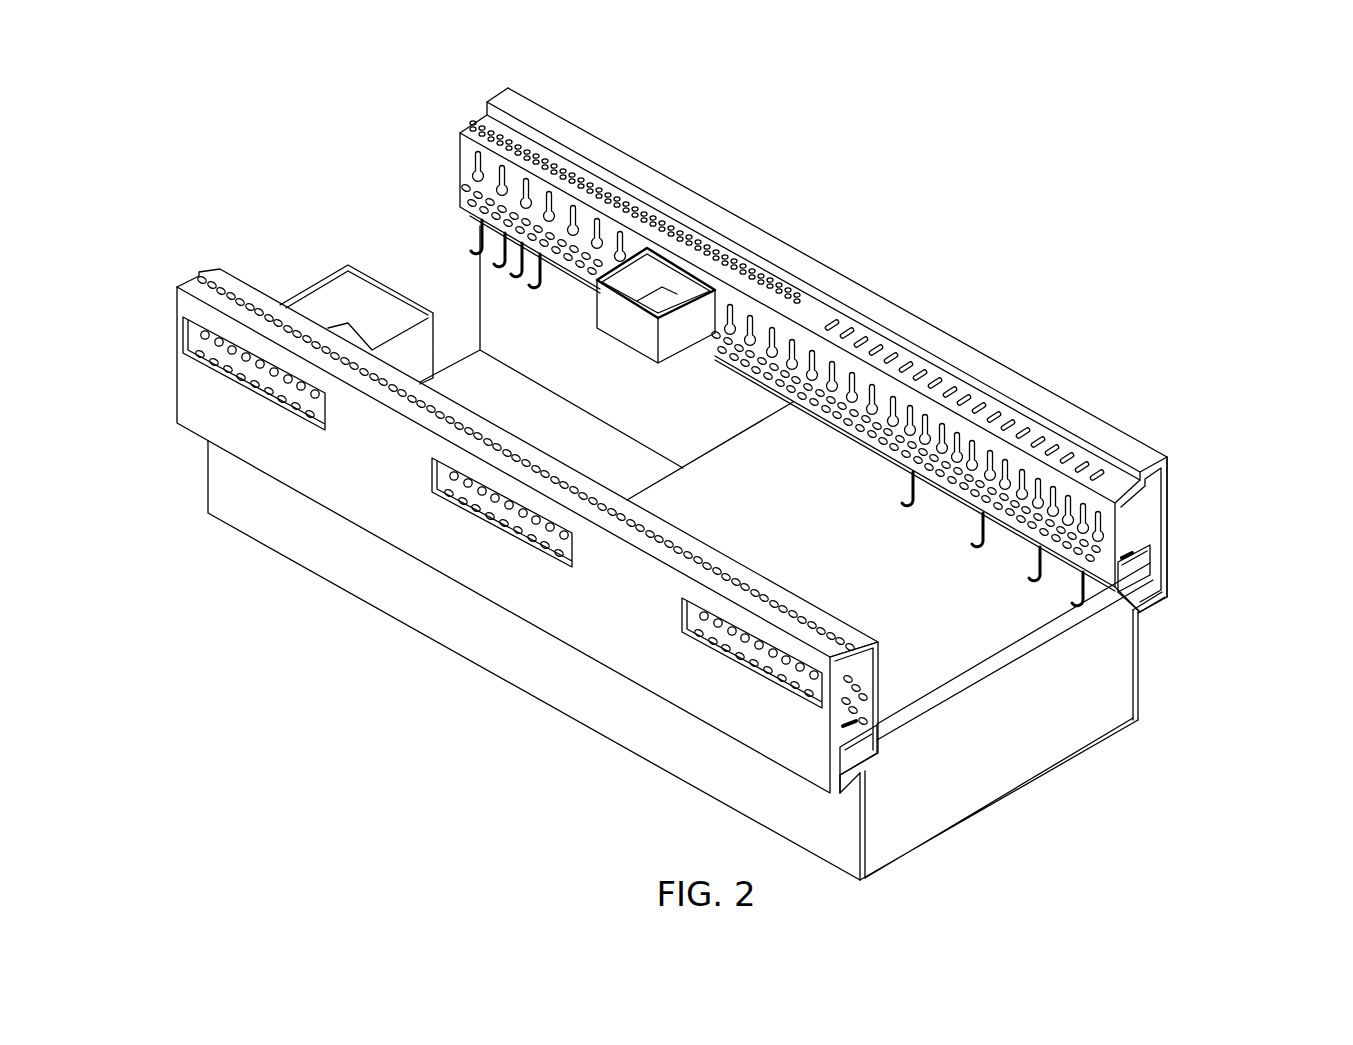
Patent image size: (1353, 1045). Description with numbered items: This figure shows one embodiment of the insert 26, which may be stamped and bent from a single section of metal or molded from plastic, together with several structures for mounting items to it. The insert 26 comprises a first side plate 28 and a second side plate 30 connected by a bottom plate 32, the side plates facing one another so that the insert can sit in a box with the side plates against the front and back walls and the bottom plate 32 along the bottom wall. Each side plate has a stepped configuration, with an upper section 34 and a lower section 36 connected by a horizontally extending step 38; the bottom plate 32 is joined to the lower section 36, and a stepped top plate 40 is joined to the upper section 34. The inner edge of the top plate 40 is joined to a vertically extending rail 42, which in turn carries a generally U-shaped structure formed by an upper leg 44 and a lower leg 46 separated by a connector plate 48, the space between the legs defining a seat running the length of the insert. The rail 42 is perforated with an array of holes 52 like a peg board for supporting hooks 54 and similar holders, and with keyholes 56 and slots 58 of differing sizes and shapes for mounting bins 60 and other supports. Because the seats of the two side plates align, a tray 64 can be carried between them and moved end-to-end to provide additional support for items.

The insert 26 is at (1058, 273).
The first side plate 28 is at (1025, 673).
The second side plate 30 is at (413, 700).
The bottom plate 32 is at (1030, 790).
The upper section 34 is at (1177, 538).
The lower section 36 is at (1122, 640).
The step 38 is at (1140, 592).
The stepped top plate 40 is at (328, 331).
The rail 42 is at (456, 166).
The upper leg 44 is at (1125, 548).
The lower leg 46 is at (1150, 577).
The connector plate 48 is at (1147, 556).
The holes 52 is at (582, 185).
The hooks 54 is at (538, 268).
The keyholes 56 is at (552, 180).
The slots 58 is at (693, 284).
The bin 60 is at (612, 330).
The tray 64 is at (948, 703).